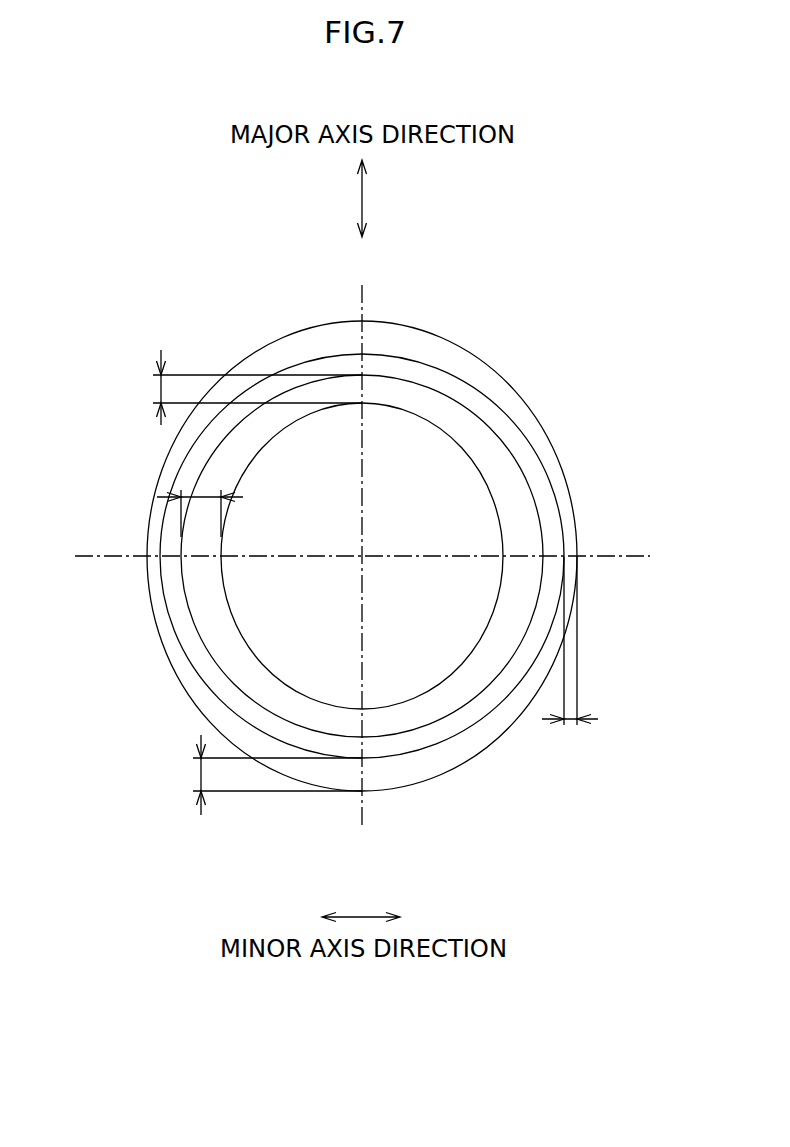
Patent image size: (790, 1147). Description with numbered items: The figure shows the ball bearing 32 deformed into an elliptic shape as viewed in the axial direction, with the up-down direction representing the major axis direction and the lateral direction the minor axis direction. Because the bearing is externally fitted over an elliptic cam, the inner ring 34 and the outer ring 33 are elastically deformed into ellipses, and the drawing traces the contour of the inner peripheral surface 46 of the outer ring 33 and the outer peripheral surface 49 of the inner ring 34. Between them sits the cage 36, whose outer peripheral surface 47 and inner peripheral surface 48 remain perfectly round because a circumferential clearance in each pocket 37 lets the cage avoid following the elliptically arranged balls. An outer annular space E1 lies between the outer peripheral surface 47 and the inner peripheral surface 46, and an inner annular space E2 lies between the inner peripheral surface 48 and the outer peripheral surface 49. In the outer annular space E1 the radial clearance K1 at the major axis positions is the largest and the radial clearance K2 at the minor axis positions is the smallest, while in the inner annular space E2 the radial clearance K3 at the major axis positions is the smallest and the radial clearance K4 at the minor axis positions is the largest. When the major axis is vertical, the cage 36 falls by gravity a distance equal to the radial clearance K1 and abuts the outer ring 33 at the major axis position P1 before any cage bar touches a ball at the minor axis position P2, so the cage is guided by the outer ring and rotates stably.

The ball bearing 32 is at (362, 517).
The outer ring 33 is at (190, 695).
The inner ring 34 is at (420, 697).
The cage 36 is at (381, 518).
The pocket 37 is at (552, 553).
The inner peripheral surface of the outer ring 46 is at (491, 373).
The outer peripheral surface of the cage 47 is at (445, 368).
The inner peripheral surface of the cage 48 is at (463, 407).
The outer peripheral surface of the inner ring 49 is at (489, 471).
The outer annular space E1 is at (418, 341).
The inner annular space E2 is at (418, 403).
The radial clearance at major axis positions in the outer annular space K1 is at (261, 775).
The radial clearance at minor axis positions in the outer annular space K2 is at (570, 660).
The radial clearance at major axis positions in the inner annular space K3 is at (241, 387).
The radial clearance at minor axis positions in the inner annular space K4 is at (197, 494).
The major axis position P1 is at (372, 802).
The minor axis position P2 is at (588, 548).